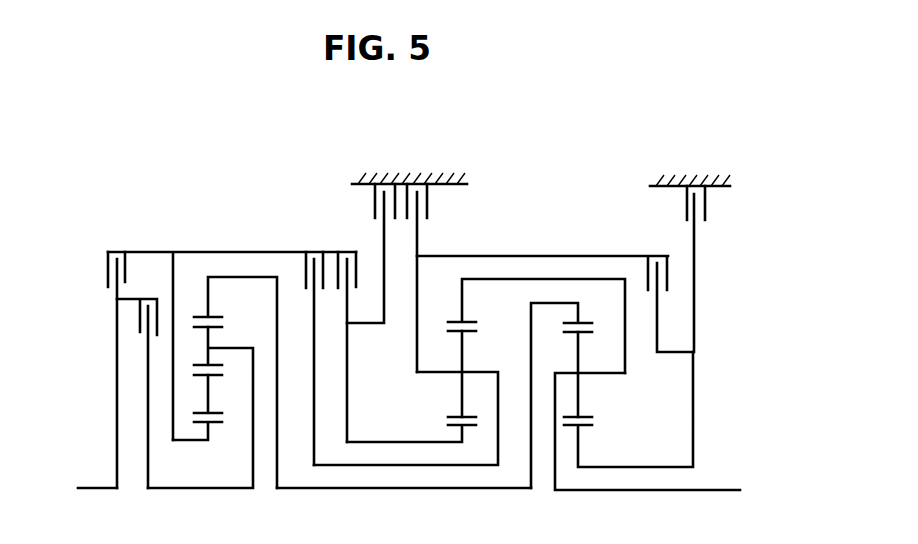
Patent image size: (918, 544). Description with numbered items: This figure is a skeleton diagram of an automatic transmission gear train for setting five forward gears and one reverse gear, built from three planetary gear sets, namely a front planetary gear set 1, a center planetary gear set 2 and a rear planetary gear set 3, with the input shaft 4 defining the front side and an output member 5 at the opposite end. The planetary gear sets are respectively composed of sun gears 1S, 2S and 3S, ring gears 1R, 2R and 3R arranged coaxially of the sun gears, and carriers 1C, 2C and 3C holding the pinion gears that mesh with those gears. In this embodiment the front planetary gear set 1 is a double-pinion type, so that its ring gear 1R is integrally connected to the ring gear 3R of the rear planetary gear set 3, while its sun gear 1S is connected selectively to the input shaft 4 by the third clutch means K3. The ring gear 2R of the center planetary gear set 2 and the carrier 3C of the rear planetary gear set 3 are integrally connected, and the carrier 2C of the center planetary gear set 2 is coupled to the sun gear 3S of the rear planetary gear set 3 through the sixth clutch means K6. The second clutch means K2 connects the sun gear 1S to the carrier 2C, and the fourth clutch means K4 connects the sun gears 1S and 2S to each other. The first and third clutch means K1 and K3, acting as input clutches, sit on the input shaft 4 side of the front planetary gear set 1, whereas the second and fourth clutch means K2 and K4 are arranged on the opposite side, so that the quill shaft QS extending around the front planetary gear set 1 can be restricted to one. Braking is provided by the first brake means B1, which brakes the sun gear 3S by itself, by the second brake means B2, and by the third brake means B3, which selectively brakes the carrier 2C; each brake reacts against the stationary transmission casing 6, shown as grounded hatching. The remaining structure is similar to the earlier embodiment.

The front planetary gear set 1 is at (212, 404).
The center planetary gear set 2 is at (469, 406).
The rear planetary gear set 3 is at (635, 421).
The input shaft 4 is at (103, 488).
The output shaft 5 is at (710, 490).
The transmission casing 6 is at (398, 183).
The first clutch means K1 is at (138, 382).
The second clutch means K2 is at (313, 348).
The third clutch means K3 is at (118, 358).
The fourth clutch means K4 is at (349, 336).
The sixth clutch means K6 is at (555, 293).
The first brake means B1 is at (680, 269).
The second brake means B2 is at (366, 253).
The third brake means B3 is at (434, 278).
The quill shaft QS is at (268, 252).
The ring gear of the front planetary gear set 1R is at (212, 318).
The carrier of the front planetary gear set 1C is at (233, 348).
The sun gear of the front planetary gear set 1S is at (207, 413).
The ring gear of the center planetary gear set 2R is at (468, 322).
The carrier of the center planetary gear set 2C is at (488, 362).
The sun gear of the center planetary gear set 2S is at (461, 445).
The ring gear of the rear planetary gear set 3R is at (572, 323).
The carrier of the rear planetary gear set 3C is at (567, 372).
The sun gear of the rear planetary gear set 3S is at (588, 427).